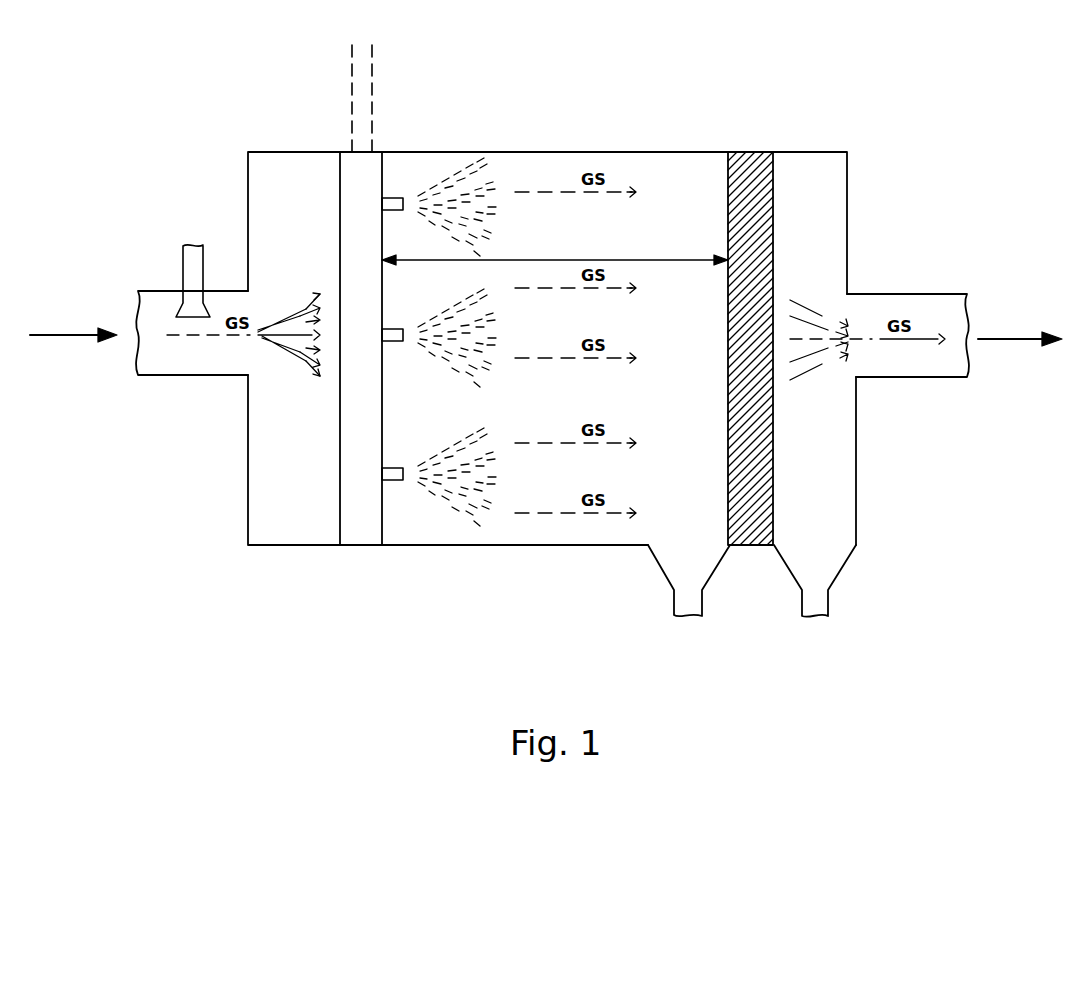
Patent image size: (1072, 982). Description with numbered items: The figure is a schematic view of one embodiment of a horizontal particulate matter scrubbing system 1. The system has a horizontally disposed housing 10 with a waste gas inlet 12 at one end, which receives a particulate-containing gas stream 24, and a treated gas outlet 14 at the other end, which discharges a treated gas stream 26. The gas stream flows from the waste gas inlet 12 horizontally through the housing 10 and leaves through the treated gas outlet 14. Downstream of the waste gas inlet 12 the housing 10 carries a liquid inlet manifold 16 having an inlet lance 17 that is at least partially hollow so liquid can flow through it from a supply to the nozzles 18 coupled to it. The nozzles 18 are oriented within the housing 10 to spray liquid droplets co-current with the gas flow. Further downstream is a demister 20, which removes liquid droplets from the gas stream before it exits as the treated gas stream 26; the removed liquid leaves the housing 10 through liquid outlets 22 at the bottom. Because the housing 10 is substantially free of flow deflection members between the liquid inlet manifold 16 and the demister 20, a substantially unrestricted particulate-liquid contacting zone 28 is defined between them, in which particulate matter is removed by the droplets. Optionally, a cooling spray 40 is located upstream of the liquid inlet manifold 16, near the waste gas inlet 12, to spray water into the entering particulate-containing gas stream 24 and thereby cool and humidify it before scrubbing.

The horizontal particulate matter scrubbing system 1 is at (895, 113).
The horizontally disposed housing 10 is at (293, 151).
The waste gas inlet 12 is at (163, 290).
The treated gas outlet 14 is at (922, 294).
The liquid inlet manifold 16 is at (373, 95).
The inlet lance 17 is at (365, 530).
The nozzle 18 is at (382, 204).
The demister 20 is at (748, 153).
The liquid outlet 22 is at (682, 604).
The particulate-containing gas stream 24 is at (73, 324).
The treated gas stream 26 is at (1020, 327).
The substantially unrestricted particulate-liquid contacting zone 28 is at (542, 260).
The cooling spray 40 is at (183, 246).